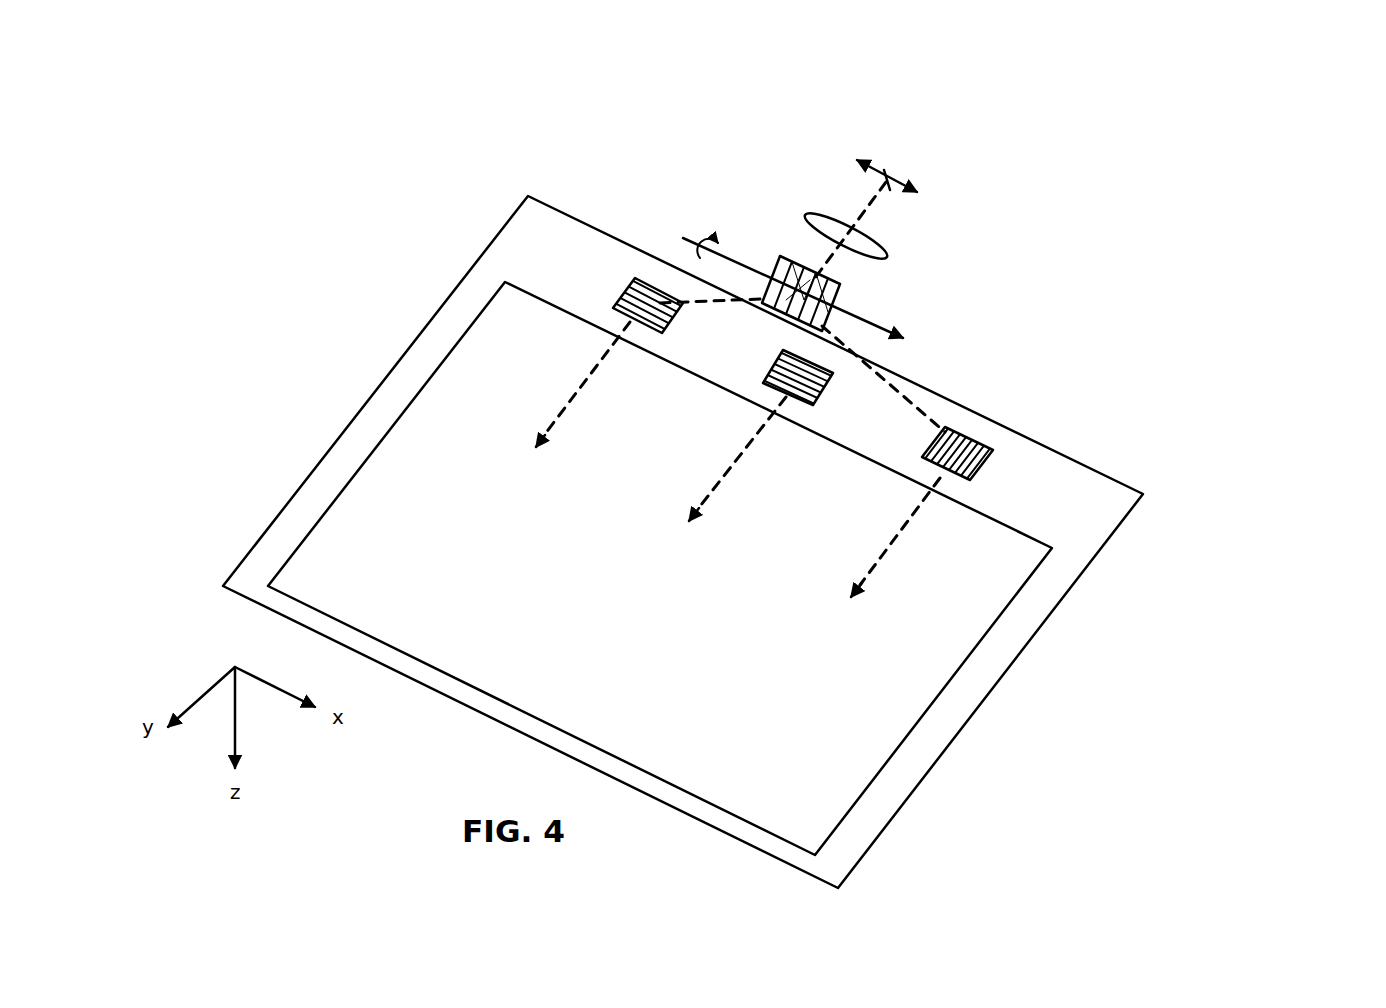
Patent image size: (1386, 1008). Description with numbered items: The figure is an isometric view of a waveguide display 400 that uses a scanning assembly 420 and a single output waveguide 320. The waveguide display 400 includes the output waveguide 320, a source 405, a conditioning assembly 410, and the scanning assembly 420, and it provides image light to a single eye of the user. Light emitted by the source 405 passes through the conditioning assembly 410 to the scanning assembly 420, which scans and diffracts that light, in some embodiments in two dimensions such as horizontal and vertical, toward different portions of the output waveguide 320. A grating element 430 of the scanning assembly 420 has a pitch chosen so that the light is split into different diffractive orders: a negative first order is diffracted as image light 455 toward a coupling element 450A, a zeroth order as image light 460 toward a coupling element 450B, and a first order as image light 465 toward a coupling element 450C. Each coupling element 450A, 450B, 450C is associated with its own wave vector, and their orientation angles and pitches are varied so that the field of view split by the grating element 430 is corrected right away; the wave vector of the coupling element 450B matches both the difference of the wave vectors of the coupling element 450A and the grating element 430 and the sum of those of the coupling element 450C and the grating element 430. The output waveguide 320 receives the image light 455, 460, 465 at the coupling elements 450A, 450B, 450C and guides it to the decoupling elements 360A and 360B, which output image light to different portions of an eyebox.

The waveguide display 400 is at (178, 44).
The source 405 is at (886, 172).
The conditioning assembly 410 is at (886, 256).
The scanning assembly 420 is at (838, 283).
The grating element 430 is at (838, 293).
The coupling element 450A is at (615, 300).
The coupling element 450B is at (765, 373).
The coupling element 450C is at (993, 455).
The image light 455 is at (735, 300).
The image light 460 is at (800, 348).
The image light 465 is at (897, 387).
The output waveguide 320 is at (944, 750).
The decoupling element 360A is at (933, 707).
The decoupling element 360B is at (936, 767).